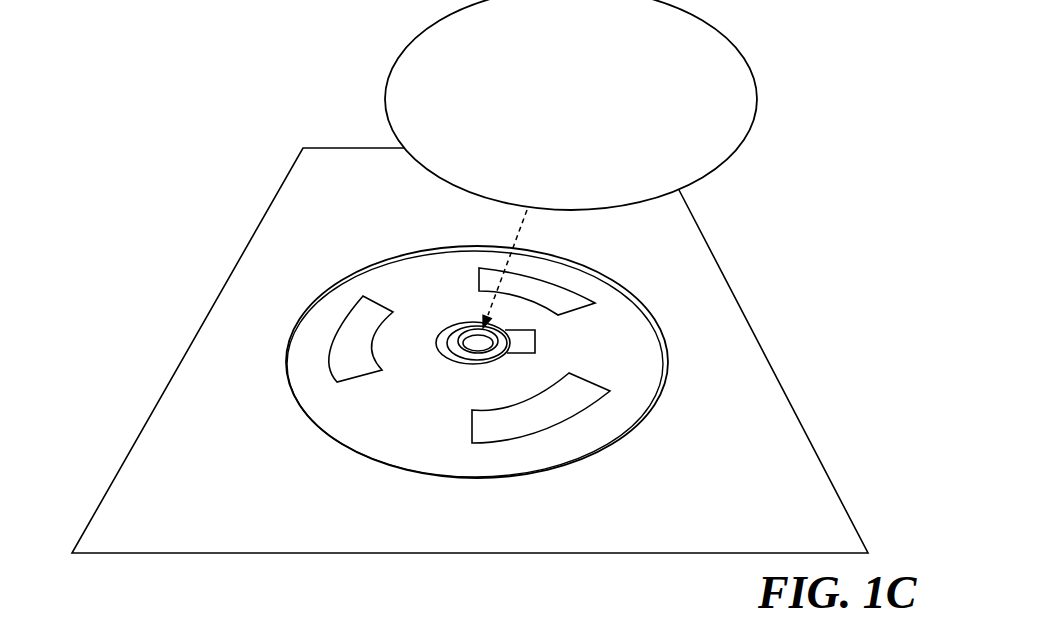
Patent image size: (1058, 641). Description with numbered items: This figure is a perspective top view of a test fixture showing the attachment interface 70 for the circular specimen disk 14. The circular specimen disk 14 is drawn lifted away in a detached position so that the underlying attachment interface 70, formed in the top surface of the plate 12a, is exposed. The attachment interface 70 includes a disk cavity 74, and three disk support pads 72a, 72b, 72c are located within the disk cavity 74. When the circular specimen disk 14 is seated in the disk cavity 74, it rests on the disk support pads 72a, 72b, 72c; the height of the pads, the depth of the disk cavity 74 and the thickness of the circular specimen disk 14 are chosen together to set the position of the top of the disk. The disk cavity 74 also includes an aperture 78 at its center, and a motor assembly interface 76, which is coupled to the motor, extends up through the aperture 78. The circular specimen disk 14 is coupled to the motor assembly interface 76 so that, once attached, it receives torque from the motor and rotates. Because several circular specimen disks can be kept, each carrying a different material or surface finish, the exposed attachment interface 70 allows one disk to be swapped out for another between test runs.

The top surface of plate 12a is at (470, 350).
The circular specimen disk 14 is at (571, 164).
The attachment interface 70 is at (463, 244).
The disk support pad 72a is at (343, 360).
The disk support pad 72b is at (567, 293).
The disk support pad 72c is at (582, 407).
The disk cavity 74 is at (477, 362).
The motor assembly interface 76 is at (500, 340).
The aperture 78 is at (536, 352).